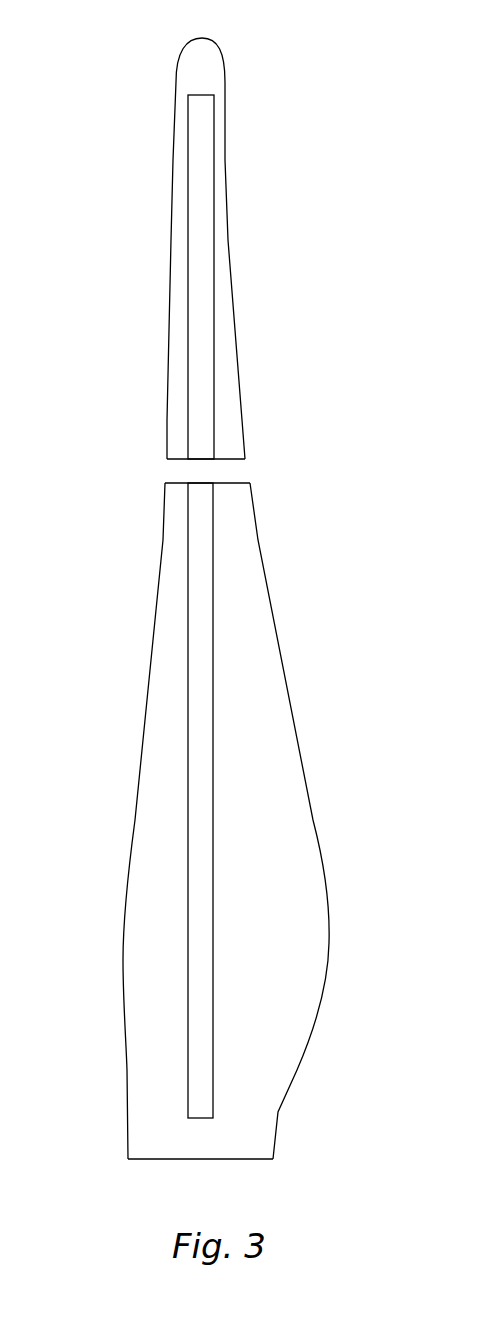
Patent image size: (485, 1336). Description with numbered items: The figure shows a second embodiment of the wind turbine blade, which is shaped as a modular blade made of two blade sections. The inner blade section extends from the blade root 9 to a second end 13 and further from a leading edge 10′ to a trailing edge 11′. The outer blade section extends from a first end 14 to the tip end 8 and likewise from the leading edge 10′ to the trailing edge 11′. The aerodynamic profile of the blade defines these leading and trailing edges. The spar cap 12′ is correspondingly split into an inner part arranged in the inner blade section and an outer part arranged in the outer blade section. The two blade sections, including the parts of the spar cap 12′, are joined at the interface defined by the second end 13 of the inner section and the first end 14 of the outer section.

The tip end 8 is at (203, 40).
The blade root 9 is at (207, 1159).
The leading edge 10′ is at (168, 316).
The trailing edge 11′ is at (232, 300).
The spar cap 12′ is at (200, 420).
The second end 13 is at (232, 483).
The first end 14 is at (170, 460).